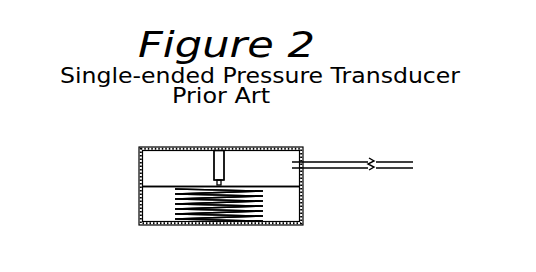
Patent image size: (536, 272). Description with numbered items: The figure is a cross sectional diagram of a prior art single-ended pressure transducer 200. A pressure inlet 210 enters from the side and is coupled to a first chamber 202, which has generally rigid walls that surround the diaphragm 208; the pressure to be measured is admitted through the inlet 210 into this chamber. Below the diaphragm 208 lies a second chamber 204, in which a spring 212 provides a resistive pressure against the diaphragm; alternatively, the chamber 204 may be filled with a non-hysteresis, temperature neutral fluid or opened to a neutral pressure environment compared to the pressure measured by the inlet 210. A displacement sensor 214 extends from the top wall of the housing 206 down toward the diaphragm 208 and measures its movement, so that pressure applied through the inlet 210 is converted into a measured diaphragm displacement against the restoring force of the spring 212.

The single-ended pressure transducer 200 is at (243, 144).
The first chamber 202 is at (155, 172).
The chamber 204 is at (155, 203).
The housing 206 is at (140, 226).
The diaphragm 208 is at (173, 189).
The pressure inlet 210 is at (374, 167).
The spring 212 is at (265, 202).
The displacement sensor 214 is at (217, 165).